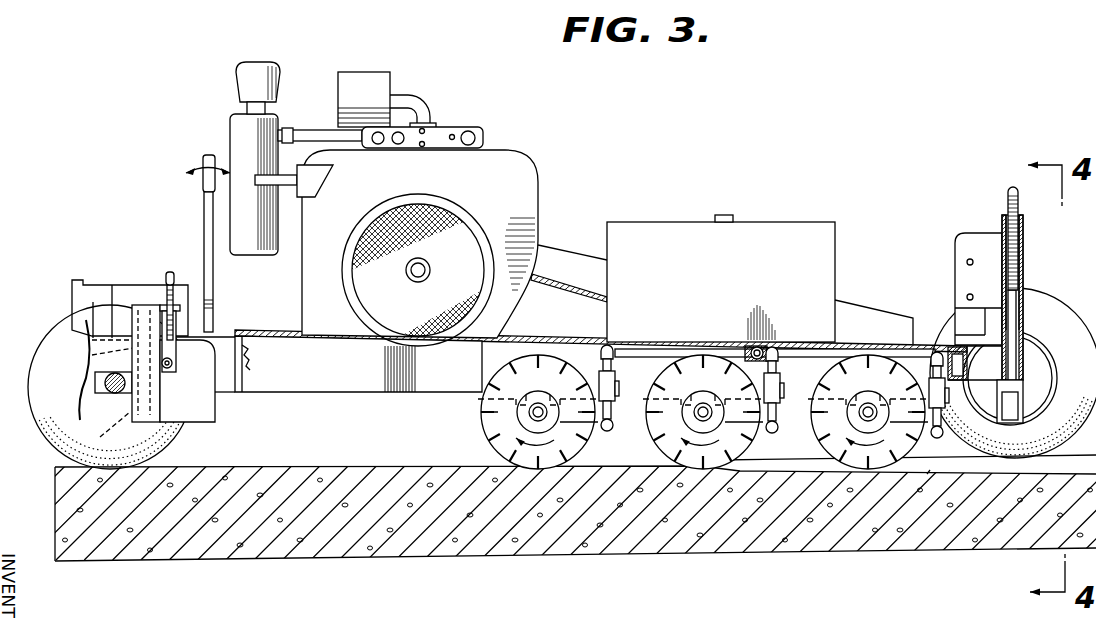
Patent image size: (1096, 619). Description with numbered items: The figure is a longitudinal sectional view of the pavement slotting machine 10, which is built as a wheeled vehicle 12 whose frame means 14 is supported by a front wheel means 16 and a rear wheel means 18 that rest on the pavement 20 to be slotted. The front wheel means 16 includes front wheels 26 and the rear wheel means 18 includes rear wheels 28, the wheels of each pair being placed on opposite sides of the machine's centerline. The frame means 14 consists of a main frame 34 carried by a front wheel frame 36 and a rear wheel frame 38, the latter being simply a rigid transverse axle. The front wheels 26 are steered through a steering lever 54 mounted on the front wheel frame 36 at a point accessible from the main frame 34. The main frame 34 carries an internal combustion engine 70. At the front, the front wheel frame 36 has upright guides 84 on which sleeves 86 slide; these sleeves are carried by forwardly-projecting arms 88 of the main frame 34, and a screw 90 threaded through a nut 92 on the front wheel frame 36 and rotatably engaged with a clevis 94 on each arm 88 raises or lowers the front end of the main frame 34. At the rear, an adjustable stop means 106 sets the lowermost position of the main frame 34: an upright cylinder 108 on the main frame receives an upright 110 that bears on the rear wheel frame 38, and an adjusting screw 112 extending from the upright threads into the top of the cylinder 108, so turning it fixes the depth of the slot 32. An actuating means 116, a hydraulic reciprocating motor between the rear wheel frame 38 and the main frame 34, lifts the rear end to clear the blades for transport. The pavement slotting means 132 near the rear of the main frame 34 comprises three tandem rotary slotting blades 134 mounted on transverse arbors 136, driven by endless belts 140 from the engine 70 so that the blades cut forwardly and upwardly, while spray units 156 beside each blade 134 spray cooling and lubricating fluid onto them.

The pavement slotting machine 10 is at (549, 322).
The wheeled vehicle 12 is at (776, 197).
The frame means 14 is at (867, 343).
The front wheel means 16 is at (97, 377).
The rear wheel means 18 is at (1013, 361).
The pavement 20 is at (305, 553).
The front wheel 26 is at (42, 348).
The rear wheel 28 is at (1060, 316).
The slot 32 is at (927, 474).
The main frame 34 is at (342, 388).
The front wheel frame 36 is at (112, 285).
The rear wheel frame 38 is at (1024, 410).
The steering lever 54 is at (205, 212).
The internal combustion engine 70 is at (528, 165).
The upright guide 84 is at (88, 353).
The sleeve 86 is at (108, 433).
The forwardly-projecting arm 88 is at (205, 412).
The screw 90 is at (167, 278).
The nut 92 is at (173, 305).
The clevis 94 is at (170, 353).
The adjustable stop means 106 is at (1025, 229).
The upright cylinder 108 is at (1023, 262).
The upright 110 is at (1012, 323).
The adjusting screw 112 is at (1008, 203).
The actuating means 116 is at (960, 323).
The pavement slotting means 132 is at (707, 468).
The rotary slotting blade 134 is at (480, 425).
The arbor 136 is at (517, 412).
The endless belt 140 is at (559, 282).
The spray unit 156 is at (613, 428).